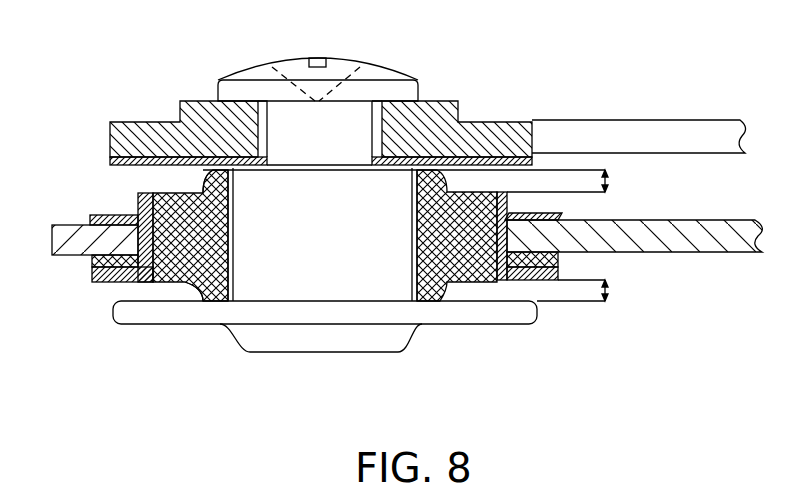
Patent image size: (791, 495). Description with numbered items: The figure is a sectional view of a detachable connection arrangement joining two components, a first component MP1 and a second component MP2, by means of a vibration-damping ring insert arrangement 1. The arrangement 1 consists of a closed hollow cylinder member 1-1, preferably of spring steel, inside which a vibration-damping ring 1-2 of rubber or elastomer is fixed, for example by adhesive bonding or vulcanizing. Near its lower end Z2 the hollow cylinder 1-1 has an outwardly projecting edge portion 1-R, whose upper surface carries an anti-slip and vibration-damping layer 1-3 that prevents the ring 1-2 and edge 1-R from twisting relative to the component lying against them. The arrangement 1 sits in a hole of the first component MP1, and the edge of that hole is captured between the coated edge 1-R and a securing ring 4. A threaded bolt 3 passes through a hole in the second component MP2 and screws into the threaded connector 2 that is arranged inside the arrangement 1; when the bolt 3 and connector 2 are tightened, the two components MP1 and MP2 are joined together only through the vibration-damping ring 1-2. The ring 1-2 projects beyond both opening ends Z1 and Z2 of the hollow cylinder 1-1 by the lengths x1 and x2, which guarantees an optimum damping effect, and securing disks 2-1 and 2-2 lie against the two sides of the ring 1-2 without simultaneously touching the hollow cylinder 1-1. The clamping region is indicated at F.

The vibration-damping ring insert arrangement 1 is at (177, 193).
The hollow cylinder member 1-1 is at (500, 205).
The vibration-damping ring 1-2 is at (178, 285).
The layer 1-3 is at (93, 258).
The edge portion 1-R is at (90, 281).
The threaded connector 2 is at (292, 287).
The securing disk 2-1 is at (433, 312).
The securing disk 2-2 is at (389, 167).
The threaded bolt 3 is at (243, 95).
The securing ring 4 is at (560, 214).
The fastening region F is at (533, 262).
The opening end Z1 is at (152, 193).
The lower end Z2 is at (160, 283).
The projecting length x1 is at (612, 180).
The projecting length x2 is at (607, 290).
The first component MP1 is at (727, 238).
The second component MP2 is at (697, 140).